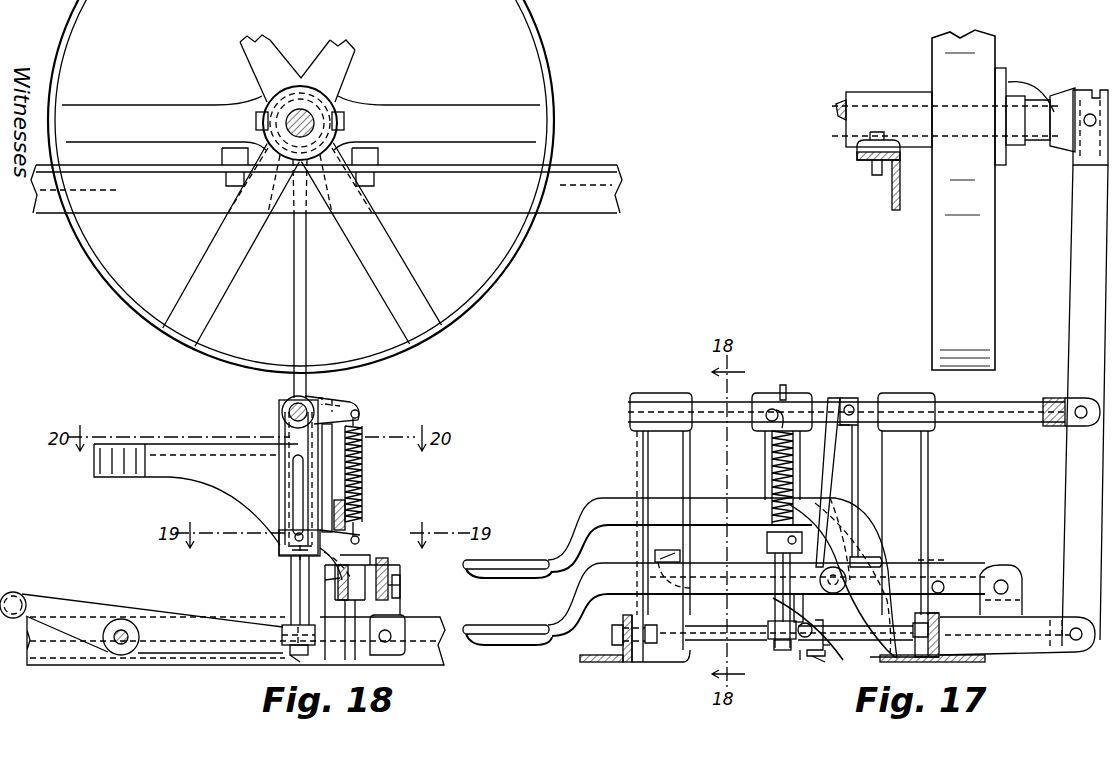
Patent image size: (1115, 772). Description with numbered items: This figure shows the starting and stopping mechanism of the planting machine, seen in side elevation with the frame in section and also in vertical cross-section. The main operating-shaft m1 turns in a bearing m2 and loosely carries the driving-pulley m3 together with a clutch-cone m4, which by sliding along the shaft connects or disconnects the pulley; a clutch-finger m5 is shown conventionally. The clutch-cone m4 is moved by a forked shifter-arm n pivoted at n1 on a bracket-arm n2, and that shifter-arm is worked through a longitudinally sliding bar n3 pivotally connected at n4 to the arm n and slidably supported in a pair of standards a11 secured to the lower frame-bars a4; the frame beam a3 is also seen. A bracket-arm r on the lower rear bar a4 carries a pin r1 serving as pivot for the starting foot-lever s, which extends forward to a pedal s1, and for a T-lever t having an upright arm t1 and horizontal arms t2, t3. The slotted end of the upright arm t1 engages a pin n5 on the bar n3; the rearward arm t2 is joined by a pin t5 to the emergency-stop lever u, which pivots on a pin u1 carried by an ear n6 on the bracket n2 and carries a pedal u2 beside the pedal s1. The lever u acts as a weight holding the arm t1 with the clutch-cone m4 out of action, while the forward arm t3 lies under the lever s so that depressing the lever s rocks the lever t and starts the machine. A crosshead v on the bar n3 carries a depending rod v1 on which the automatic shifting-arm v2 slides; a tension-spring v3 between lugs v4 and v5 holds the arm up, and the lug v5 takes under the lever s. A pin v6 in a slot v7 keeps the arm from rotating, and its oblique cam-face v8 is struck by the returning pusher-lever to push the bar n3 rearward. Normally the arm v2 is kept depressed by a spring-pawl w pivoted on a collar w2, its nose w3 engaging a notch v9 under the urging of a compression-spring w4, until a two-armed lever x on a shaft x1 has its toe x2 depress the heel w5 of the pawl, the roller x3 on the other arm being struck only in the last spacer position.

In FIG. 18, the main or operating-shaft m1 is at (305, 112).
In FIG. 17, the main or operating-shaft m1 is at (836, 112).
In FIG. 18, the bearing m2 is at (340, 100).
In FIG. 17, the bearing m2 is at (905, 92).
In FIG. 18, the driving-pulley m3 is at (552, 78).
In FIG. 17, the driving-pulley m3 is at (996, 252).
In FIG. 17, the clutch-cone m4 is at (1080, 90).
In FIG. 17, the clutch-finger m5 is at (1030, 80).
In FIG. 18, the frame beam a3 is at (168, 214).
In FIG. 17, the frame beam a3 is at (892, 200).
In FIG. 18, the lower frame-bar a4 is at (68, 660).
In FIG. 17, the lower frame-bar a4 is at (620, 662).
In FIG. 17, the standards a11 is at (640, 475).
In FIG. 18, the forked shifter-arm n is at (306, 328).
In FIG. 17, the forked shifter-arm n is at (1068, 335).
In FIG. 17, the pivot n1 is at (1083, 636).
In FIG. 17, the bracket-arm n2 is at (1040, 646).
In FIG. 18, the longitudinally sliding bar n3 is at (283, 409).
In FIG. 17, the longitudinally sliding bar n3 is at (963, 414).
In FIG. 17, the pivotal connection n4 is at (1076, 405).
In FIG. 17, the pin n5 is at (842, 426).
In FIG. 18, the ear n6 is at (396, 598).
In FIG. 17, the ear n6 is at (1016, 598).
In FIG. 17, the crosshead v is at (812, 400).
In FIG. 18, the vertically depending rod v1 is at (291, 590).
In FIG. 17, the vertically depending rod v1 is at (783, 651).
In FIG. 18, the automatic shifting-arm v2 is at (215, 480).
In FIG. 18, the coiled tension-spring v3 is at (363, 473).
In FIG. 17, the coiled tension-spring v3 is at (772, 478).
In FIG. 18, the lug v4 is at (352, 407).
In FIG. 17, the lug v4 is at (768, 414).
In FIG. 18, the lug v5 is at (360, 538).
In FIG. 17, the lug v5 is at (767, 545).
In FIG. 18, the pin v6 is at (296, 540).
In FIG. 17, the pin v6 is at (820, 518).
In FIG. 18, the slot v7 is at (296, 488).
In FIG. 18, the oblique cam-face v8 is at (104, 480).
In FIG. 18, the notch v9 is at (292, 560).
In FIG. 17, the notch v9 is at (803, 540).
In FIG. 18, the T-lever t is at (332, 560).
In FIG. 17, the T-lever t is at (853, 545).
In FIG. 18, the upright arm t1 is at (332, 455).
In FIG. 17, the upright arm t1 is at (826, 470).
In FIG. 17, the rearwardly extending arm t2 is at (850, 398).
In FIG. 18, the forwardly extending arm t3 is at (368, 556).
In FIG. 17, the forwardly extending arm t3 is at (681, 557).
In FIG. 17, the pin t5 is at (944, 582).
In FIG. 18, the foot-lever s is at (346, 503).
In FIG. 17, the foot-lever s is at (594, 504).
In FIG. 17, the pedal s1 is at (512, 560).
In FIG. 18, the emergency-stop lever u is at (389, 568).
In FIG. 17, the emergency-stop lever u is at (604, 570).
In FIG. 18, the pin u1 is at (400, 585).
In FIG. 17, the pin u1 is at (1010, 585).
In FIG. 17, the pedal u2 is at (505, 626).
In FIG. 18, the bracket-arm r is at (364, 634).
In FIG. 17, the bracket-arm r is at (878, 636).
In FIG. 18, the pin r1 is at (325, 580).
In FIG. 17, the pin r1 is at (820, 580).
In FIG. 17, the spring-pawl w is at (798, 628).
In FIG. 18, the collar w2 is at (282, 635).
In FIG. 17, the collar w2 is at (768, 630).
In FIG. 17, the nose w3 is at (794, 612).
In FIG. 17, the coiled compression-spring w4 is at (800, 652).
In FIG. 18, the heel w5 is at (290, 660).
In FIG. 17, the heel w5 is at (822, 660).
In FIG. 18, the two-armed lever x is at (190, 632).
In FIG. 17, the two-armed lever x is at (840, 610).
In FIG. 18, the shaft x1 is at (124, 630).
In FIG. 17, the shaft x1 is at (715, 641).
In FIG. 18, the toe x2 is at (305, 652).
In FIG. 17, the toe x2 is at (826, 650).
In FIG. 18, the roller x3 is at (24, 600).